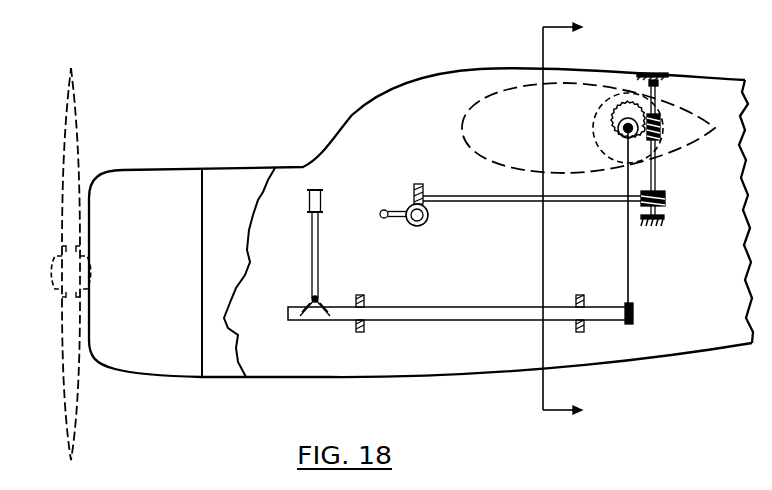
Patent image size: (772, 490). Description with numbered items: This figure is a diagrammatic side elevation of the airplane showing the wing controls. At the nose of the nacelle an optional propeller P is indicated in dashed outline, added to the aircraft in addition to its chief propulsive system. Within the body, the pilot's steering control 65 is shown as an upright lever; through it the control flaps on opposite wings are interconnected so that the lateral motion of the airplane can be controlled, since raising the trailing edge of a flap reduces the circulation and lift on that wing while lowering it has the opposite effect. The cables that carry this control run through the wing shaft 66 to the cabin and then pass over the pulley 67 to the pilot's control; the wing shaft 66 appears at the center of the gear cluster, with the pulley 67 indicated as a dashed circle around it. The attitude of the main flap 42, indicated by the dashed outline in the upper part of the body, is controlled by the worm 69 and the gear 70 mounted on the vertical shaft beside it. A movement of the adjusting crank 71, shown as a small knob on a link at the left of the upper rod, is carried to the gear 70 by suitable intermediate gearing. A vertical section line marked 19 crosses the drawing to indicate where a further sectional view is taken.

The propeller P is at (66, 364).
The section line 19- 19 is at (575, 218).
The main flap 42 is at (671, 151).
The pilot's steering control 65 is at (318, 265).
The wing shaft 66 is at (612, 128).
The pulley 67 is at (603, 148).
The worm 69 is at (664, 116).
The gear 70 is at (611, 104).
The adjusting crank 71 is at (380, 215).